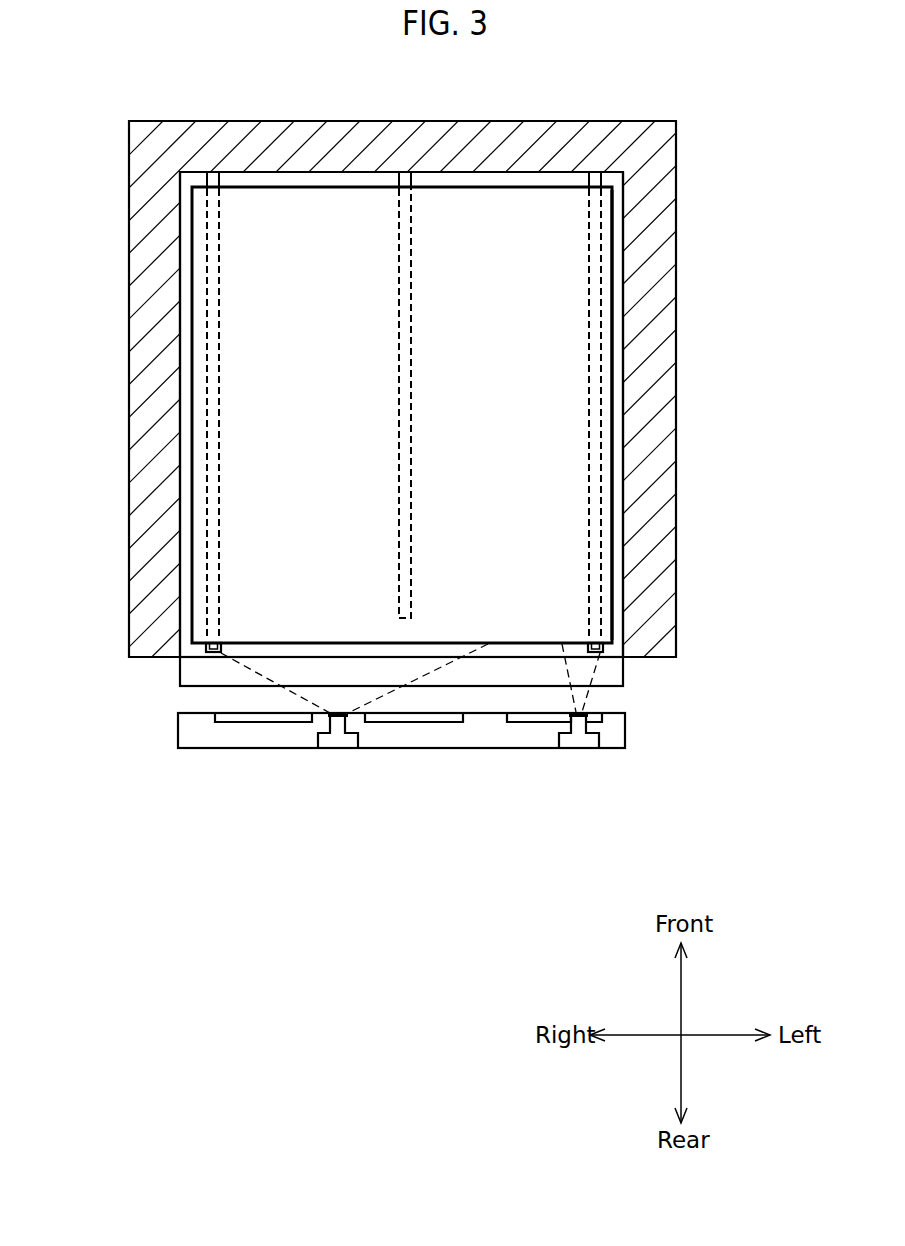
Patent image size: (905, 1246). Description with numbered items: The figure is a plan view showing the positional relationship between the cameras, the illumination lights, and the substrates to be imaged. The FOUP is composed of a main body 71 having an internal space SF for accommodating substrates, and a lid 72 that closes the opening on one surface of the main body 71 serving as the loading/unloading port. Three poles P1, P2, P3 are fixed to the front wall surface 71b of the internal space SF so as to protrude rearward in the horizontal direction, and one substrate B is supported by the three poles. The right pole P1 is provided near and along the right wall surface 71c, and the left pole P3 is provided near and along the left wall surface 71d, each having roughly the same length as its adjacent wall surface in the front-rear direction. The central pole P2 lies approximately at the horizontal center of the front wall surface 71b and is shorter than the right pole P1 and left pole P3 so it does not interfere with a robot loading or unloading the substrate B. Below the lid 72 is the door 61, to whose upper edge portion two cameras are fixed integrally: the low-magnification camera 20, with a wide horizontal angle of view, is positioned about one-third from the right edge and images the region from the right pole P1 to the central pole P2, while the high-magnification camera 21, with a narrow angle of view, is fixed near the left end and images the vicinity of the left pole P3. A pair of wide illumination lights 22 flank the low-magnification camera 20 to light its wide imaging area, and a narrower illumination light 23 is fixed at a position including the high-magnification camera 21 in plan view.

The main body 71 is at (676, 289).
The front wall surface 71b is at (345, 176).
The right wall surface 71c is at (176, 326).
The left wall surface 71d is at (624, 340).
The substrate B is at (614, 378).
The internal space SF is at (618, 205).
The right pole P1 is at (213, 172).
The central pole P2 is at (405, 172).
The left pole P3 is at (594, 172).
The lid 72 is at (623, 676).
The door 61 is at (625, 727).
The low-magnification camera 20 is at (338, 748).
The high-magnification camera 21 is at (580, 748).
The illumination lights 22 is at (266, 723).
The illumination light 23 is at (532, 723).